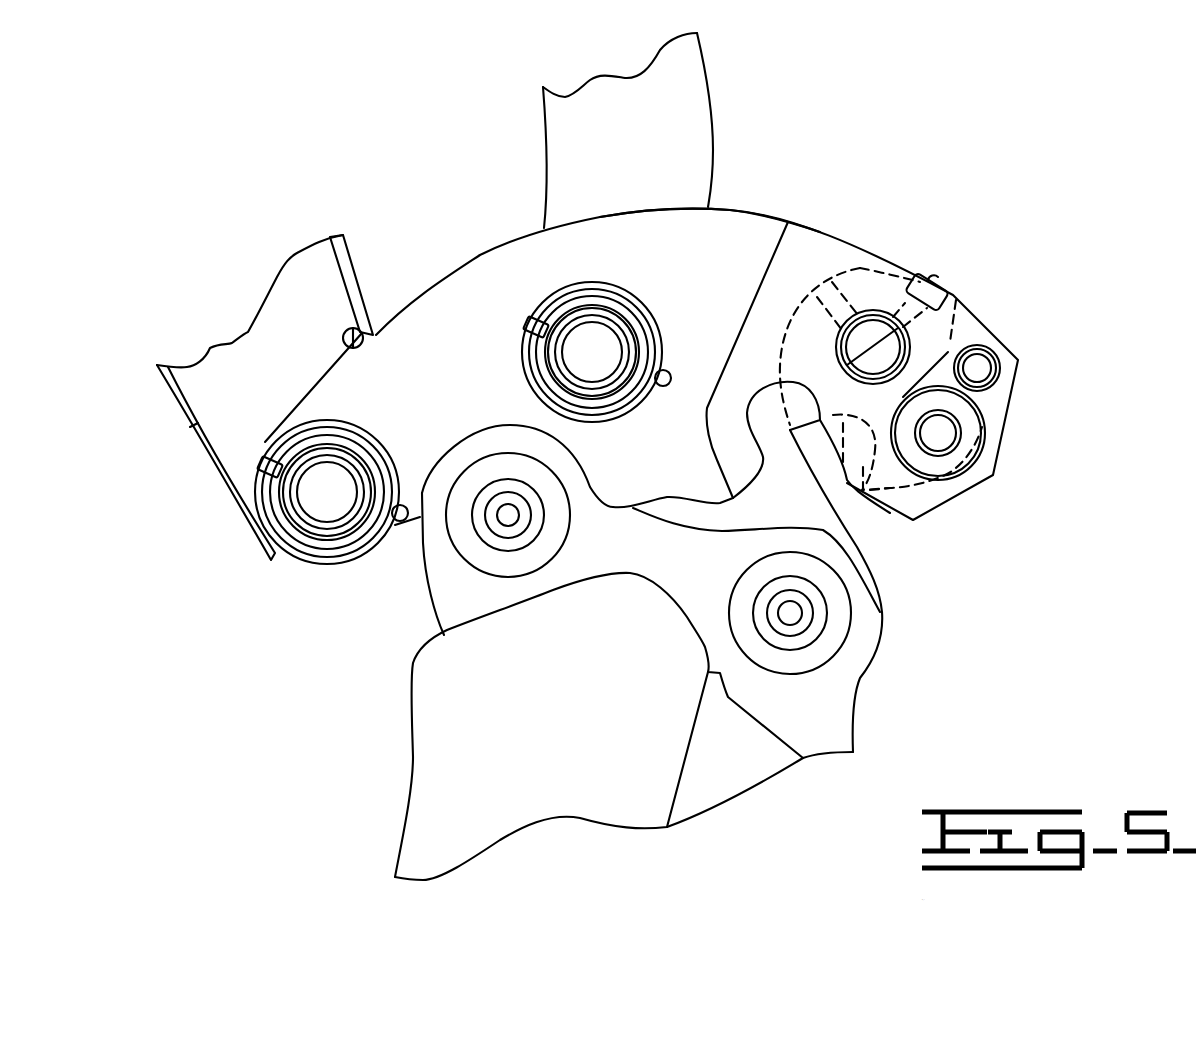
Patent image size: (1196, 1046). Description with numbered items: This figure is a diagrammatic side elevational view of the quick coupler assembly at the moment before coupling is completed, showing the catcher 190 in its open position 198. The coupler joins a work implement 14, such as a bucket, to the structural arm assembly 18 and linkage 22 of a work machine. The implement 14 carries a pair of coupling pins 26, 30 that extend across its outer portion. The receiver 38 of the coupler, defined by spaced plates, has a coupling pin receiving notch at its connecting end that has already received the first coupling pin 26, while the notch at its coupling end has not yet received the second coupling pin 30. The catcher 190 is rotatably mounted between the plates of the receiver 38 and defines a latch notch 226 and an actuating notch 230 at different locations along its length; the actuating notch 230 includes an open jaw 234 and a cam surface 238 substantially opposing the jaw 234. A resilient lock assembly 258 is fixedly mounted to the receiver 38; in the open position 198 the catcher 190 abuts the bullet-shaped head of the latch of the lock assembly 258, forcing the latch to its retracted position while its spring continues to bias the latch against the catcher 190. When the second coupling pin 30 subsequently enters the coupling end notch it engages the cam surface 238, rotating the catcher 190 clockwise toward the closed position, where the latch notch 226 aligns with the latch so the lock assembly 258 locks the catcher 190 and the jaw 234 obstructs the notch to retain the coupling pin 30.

The work implement 14 is at (855, 741).
The structural arm assembly 18 is at (290, 395).
The linkage 22 is at (648, 163).
The coupling pin 26 is at (493, 547).
The coupling pin 30 is at (815, 635).
The receiver 38 is at (747, 212).
The catcher 190 is at (860, 268).
The open position 198 is at (957, 293).
The latch notch 226 is at (953, 334).
The actuating notch 230 is at (857, 490).
The open jaw 234 is at (843, 462).
The cam surface 238 is at (858, 550).
The resilient lock assembly 258 is at (963, 439).